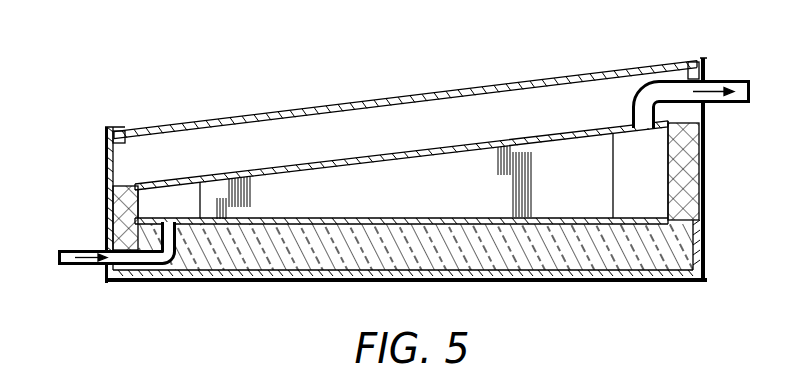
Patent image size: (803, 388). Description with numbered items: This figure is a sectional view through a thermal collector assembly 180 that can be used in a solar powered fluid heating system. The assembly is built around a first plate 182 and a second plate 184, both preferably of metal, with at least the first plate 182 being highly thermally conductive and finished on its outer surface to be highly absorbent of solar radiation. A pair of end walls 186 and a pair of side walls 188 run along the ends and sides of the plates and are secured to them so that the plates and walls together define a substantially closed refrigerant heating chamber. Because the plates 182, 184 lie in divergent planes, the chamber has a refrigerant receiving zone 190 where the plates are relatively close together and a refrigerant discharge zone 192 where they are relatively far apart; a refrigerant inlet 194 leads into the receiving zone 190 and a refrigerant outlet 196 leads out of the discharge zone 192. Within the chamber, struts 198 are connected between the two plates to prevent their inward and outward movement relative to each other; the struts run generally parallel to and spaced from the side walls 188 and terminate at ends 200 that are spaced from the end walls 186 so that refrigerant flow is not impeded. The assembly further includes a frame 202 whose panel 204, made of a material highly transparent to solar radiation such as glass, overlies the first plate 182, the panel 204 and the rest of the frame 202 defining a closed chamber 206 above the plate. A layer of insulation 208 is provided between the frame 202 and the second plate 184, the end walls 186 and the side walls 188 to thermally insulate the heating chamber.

The thermal collector assembly 180 is at (248, 73).
The first plate 182 is at (318, 162).
The second plate 184 is at (332, 222).
The end walls 186 is at (128, 196).
The side walls 188 is at (686, 186).
The refrigerant receiving zone 190 is at (163, 202).
The refrigerant discharge zone 192 is at (632, 182).
The refrigerant inlet 194 is at (165, 222).
The refrigerant outlet 196 is at (636, 133).
The struts 198 is at (427, 197).
The ends of struts 200 is at (196, 205).
The frame 202 is at (107, 163).
The panel 204 is at (338, 107).
The closed chamber 206 is at (430, 136).
The layer of insulation 208 is at (213, 255).